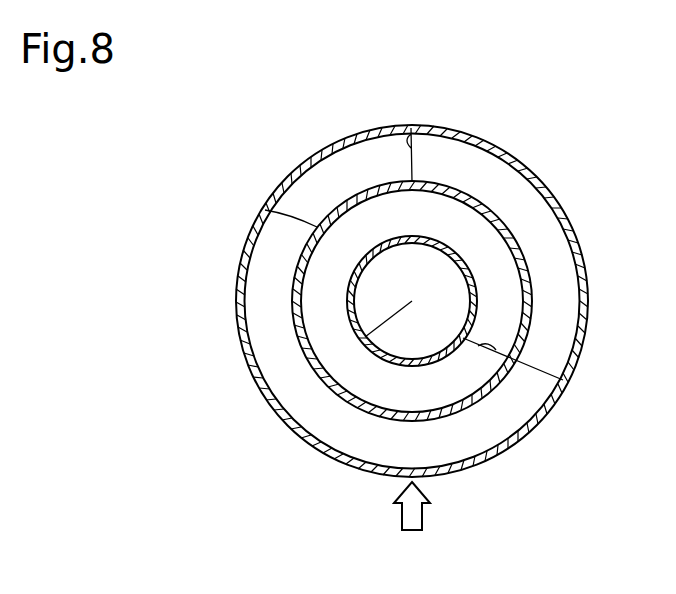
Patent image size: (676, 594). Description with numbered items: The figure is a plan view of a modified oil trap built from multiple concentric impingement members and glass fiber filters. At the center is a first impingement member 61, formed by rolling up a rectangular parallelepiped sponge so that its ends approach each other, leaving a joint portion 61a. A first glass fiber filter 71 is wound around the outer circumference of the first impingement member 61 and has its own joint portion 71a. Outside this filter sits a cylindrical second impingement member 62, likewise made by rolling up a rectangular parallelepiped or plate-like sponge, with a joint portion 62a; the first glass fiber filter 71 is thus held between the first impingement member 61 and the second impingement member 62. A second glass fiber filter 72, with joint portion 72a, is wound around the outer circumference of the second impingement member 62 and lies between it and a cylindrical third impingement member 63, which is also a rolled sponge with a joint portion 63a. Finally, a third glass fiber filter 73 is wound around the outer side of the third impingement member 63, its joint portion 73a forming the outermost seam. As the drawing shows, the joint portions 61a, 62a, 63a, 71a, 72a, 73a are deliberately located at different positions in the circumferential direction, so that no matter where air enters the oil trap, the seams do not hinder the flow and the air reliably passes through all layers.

The first impingement member 61 is at (419, 354).
The joint portion of the first impingement member 61a is at (387, 320).
The second impingement member 62 is at (472, 398).
The joint portion of the second impingement member 62a is at (563, 380).
The third impingement member 63 is at (496, 457).
The joint portion of the third impingement member 63a is at (411, 128).
The first glass fiber filter 71 is at (407, 236).
The joint portion of the first glass fiber filter 71a is at (469, 258).
The second glass fiber filter 72 is at (509, 229).
The joint portion of the second glass fiber filter 72a is at (265, 210).
The third glass fiber filter 73 is at (533, 180).
The joint portion of the third glass fiber filter 73a is at (408, 480).